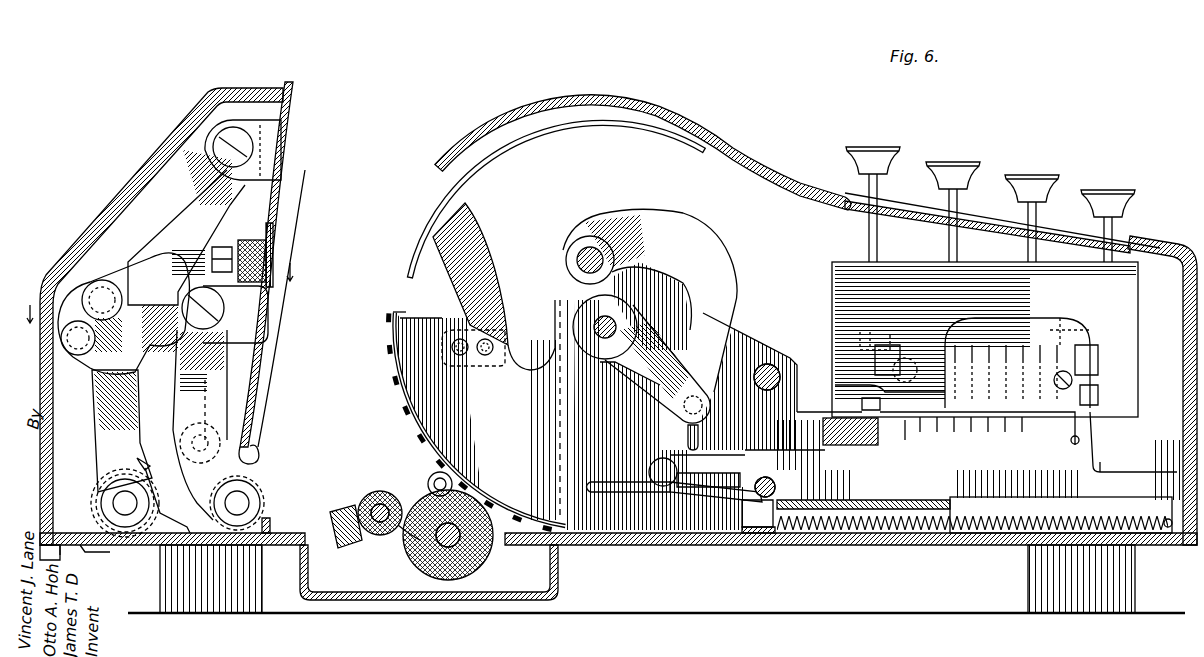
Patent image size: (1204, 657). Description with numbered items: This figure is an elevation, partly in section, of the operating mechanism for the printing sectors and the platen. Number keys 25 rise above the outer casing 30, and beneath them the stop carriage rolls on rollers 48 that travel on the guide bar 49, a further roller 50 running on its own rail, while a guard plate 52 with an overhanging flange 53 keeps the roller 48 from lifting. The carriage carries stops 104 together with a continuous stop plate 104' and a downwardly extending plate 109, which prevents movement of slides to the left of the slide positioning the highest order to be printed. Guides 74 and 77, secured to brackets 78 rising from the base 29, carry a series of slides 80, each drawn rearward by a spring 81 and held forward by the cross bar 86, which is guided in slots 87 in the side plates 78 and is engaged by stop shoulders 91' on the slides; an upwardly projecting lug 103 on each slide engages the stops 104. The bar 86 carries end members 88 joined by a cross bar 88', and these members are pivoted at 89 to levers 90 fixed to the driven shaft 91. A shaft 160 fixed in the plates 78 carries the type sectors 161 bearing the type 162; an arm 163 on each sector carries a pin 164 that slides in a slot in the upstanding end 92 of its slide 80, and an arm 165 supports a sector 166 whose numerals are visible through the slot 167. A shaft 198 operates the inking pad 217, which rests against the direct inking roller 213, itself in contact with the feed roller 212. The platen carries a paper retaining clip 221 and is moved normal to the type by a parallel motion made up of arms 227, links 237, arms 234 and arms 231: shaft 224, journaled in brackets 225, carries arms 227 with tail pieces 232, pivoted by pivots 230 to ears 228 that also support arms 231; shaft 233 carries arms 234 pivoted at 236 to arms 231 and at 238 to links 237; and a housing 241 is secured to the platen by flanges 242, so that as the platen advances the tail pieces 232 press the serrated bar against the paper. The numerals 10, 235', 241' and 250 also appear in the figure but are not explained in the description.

The paper feed direction 10 is at (157, 305).
The number keys 25 is at (1010, 177).
The base 29 is at (900, 540).
The outer casing 30 is at (1183, 392).
The rollers 48 is at (835, 382).
The guide bar 49 is at (860, 400).
The roller 50 is at (1100, 372).
The guard plate 52 is at (865, 354).
The overhanging flange 53 is at (860, 350).
The guide 74 is at (870, 447).
The guide 77 is at (952, 535).
The brackets 78 is at (745, 340).
The slides 80 is at (1100, 462).
The spring 81 is at (1068, 528).
The cross bar 86 is at (770, 530).
The slots 87 is at (620, 495).
The end members 88 is at (716, 524).
The cross bar 88' is at (745, 559).
The pivot 89 is at (663, 490).
The levers 90 is at (700, 238).
The shaft 91 is at (573, 253).
The stop shoulders 91' is at (785, 475).
The upstanding end 92 is at (708, 455).
The lug 103 is at (1097, 435).
The stops 104 is at (977, 428).
The stop plate 104' is at (932, 445).
The plate 109 is at (1077, 446).
The shaft 160 is at (594, 321).
The sectors 161 is at (525, 378).
The type 162 is at (410, 410).
The arm 163 is at (665, 320).
The pin 164 is at (700, 365).
The arm 165 is at (488, 286).
The sector 166 is at (478, 175).
The slot 167 is at (688, 118).
The shaft 198 is at (770, 365).
The feed roller 212 is at (410, 560).
The direct inking roller 213 is at (428, 486).
The inking pad 217 is at (342, 512).
The paper retaining clip 221 is at (296, 200).
The shaft 224 is at (237, 503).
The bracket 225 is at (268, 528).
The arms 227 is at (210, 402).
The ears 228 is at (236, 343).
The pivots 230 is at (228, 316).
The arms 231 is at (227, 380).
The tail pieces 232 is at (150, 268).
The shaft 233 is at (125, 503).
The arms 234 is at (92, 402).
The foot 235' is at (91, 557).
The pivot 236 is at (62, 345).
The link 237 is at (180, 197).
The pivot 238 is at (82, 300).
The housing 241 is at (216, 250).
The nut 241' is at (295, 255).
The flanges 242 is at (262, 240).
The pin 250 is at (168, 512).